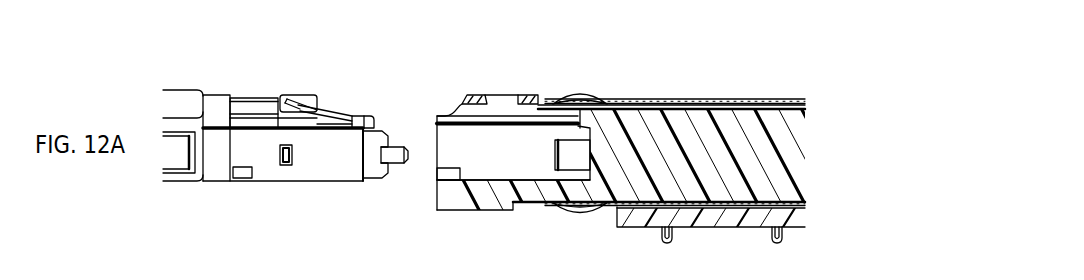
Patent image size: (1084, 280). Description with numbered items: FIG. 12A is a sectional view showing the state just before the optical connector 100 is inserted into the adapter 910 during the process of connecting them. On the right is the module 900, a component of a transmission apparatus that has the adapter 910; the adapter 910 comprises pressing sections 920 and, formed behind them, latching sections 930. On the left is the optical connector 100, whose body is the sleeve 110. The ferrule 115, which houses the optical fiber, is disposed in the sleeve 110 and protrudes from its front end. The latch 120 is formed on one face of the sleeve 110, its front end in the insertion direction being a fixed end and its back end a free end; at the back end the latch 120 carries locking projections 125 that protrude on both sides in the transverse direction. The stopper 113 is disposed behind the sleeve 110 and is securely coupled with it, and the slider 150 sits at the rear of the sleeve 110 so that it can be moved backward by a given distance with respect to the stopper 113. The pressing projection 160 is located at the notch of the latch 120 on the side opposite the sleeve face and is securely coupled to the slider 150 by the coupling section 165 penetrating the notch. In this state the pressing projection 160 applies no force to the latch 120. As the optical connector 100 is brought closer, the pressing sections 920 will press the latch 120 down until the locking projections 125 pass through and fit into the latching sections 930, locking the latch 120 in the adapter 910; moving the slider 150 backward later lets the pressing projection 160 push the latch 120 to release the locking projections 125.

The optical connector 100 is at (217, 100).
The sleeve 110 is at (315, 167).
The stopper 113 is at (223, 160).
The ferrule 115 is at (395, 157).
The latch 120 is at (340, 117).
The locking projections 125 is at (300, 102).
The slider 150 is at (167, 168).
The pressing projection 160 is at (310, 100).
The coupling section 165 is at (282, 97).
The module 900 is at (652, 100).
The adapter 910 is at (485, 192).
The pressing sections 920 is at (470, 100).
The latching sections 930 is at (510, 98).